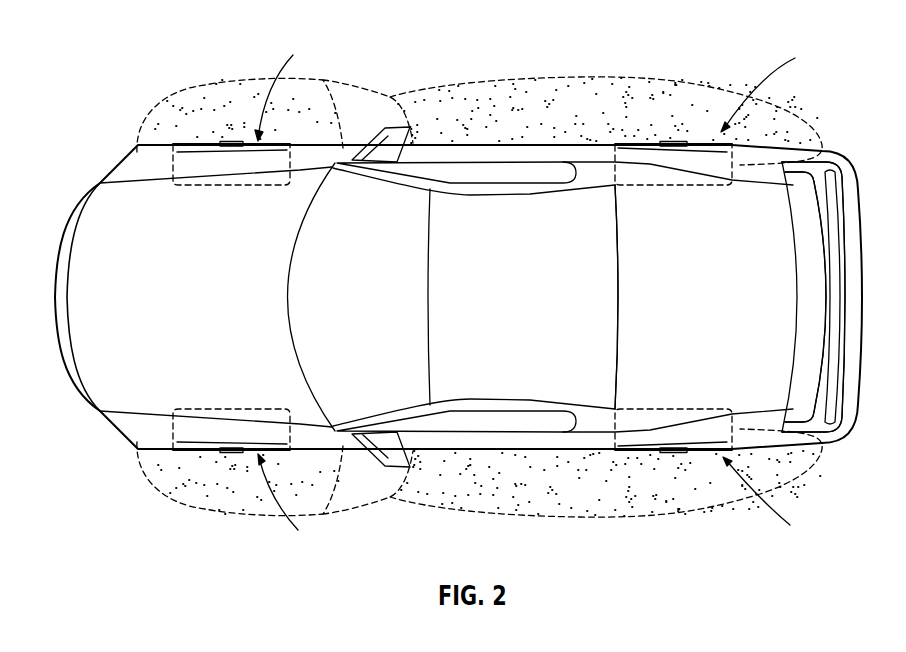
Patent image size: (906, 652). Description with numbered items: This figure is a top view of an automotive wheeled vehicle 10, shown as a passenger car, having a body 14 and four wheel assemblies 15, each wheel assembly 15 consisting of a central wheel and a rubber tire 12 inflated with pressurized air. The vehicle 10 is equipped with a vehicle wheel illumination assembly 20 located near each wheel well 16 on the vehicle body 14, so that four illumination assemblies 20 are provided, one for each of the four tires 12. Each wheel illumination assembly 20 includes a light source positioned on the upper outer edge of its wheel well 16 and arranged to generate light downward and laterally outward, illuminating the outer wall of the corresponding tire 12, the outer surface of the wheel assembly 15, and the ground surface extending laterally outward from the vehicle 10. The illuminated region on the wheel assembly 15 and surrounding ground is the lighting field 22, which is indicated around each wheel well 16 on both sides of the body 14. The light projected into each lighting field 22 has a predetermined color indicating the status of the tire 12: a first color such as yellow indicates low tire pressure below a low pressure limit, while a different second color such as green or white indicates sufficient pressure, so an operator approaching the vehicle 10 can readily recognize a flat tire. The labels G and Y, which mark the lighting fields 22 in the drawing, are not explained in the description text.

The automotive wheeled vehicle 10 is at (68, 146).
The tire 12 is at (170, 163).
The body 14 is at (338, 112).
The wheel assembly 15 is at (535, 290).
The wheel well 16 is at (307, 143).
The vehicle wheel illumination assembly 20 is at (228, 142).
The lighting field 22 is at (146, 118).
The ground area G is at (200, 88).
The lateral direction Y is at (717, 507).